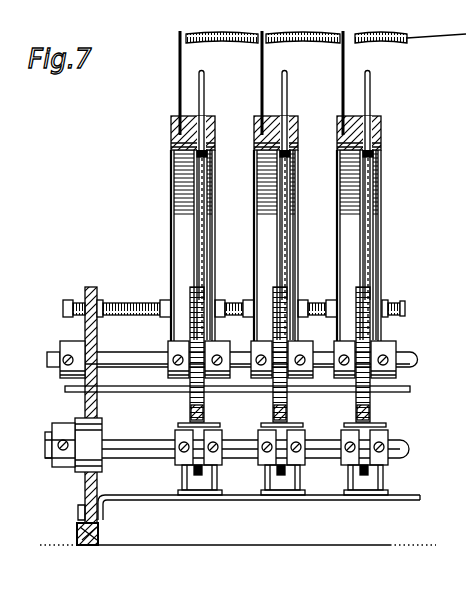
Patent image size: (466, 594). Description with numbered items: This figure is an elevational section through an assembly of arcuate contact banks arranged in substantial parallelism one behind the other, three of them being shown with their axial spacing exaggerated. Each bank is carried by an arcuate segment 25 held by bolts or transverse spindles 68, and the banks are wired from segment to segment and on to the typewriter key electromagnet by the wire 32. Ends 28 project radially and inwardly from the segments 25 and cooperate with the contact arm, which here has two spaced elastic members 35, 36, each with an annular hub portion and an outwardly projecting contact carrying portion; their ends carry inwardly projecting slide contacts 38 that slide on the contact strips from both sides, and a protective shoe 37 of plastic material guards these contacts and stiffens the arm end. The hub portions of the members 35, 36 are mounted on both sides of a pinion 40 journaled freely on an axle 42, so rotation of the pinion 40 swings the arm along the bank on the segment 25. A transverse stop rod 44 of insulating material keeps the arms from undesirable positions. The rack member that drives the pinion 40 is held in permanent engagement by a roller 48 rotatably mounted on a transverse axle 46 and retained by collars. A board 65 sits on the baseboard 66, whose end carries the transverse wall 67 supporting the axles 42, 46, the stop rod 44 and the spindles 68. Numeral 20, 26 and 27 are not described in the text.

The lead wire 20 is at (346, 64).
The arcuate segment 25 is at (383, 138).
The rod 26 is at (380, 105).
The lead wire 27 is at (170, 86).
The ends 28 is at (383, 181).
The wire 32 is at (218, 31).
The contact arm member 35 is at (209, 245).
The contact arm member 36 is at (198, 247).
The protective shoe 37 is at (212, 155).
The slide contacts 38 is at (210, 173).
The pinion 40 is at (190, 395).
The axle 42 is at (116, 358).
The stop rod 44 is at (126, 392).
The transverse axle 46 is at (141, 459).
The roller 48 is at (204, 424).
The board 65 is at (423, 496).
The baseboard 66 is at (331, 546).
The transverse wall 67 is at (86, 331).
The transverse spindle 68 is at (126, 302).